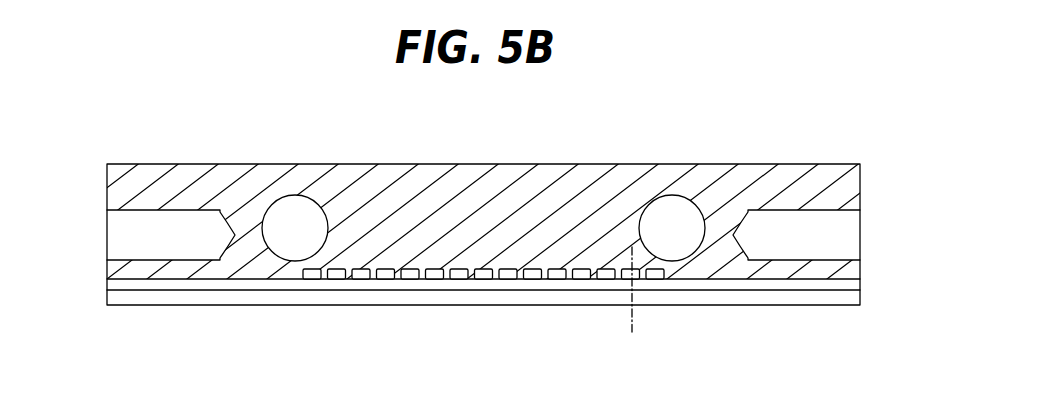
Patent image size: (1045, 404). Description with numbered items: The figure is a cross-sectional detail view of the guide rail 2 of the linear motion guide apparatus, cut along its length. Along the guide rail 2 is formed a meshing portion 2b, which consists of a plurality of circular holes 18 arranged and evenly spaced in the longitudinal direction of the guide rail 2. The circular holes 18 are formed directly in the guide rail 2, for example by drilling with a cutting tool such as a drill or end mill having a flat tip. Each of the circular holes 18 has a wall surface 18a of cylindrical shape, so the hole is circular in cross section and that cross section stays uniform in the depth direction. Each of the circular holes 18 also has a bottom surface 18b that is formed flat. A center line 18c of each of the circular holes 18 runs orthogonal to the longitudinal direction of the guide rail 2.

The guide rail 2 is at (436, 185).
The meshing portion 2b is at (503, 282).
The circular holes 18 is at (532, 280).
The wall surface 18a is at (533, 269).
The bottom surface 18b is at (587, 269).
The center line 18c is at (632, 324).